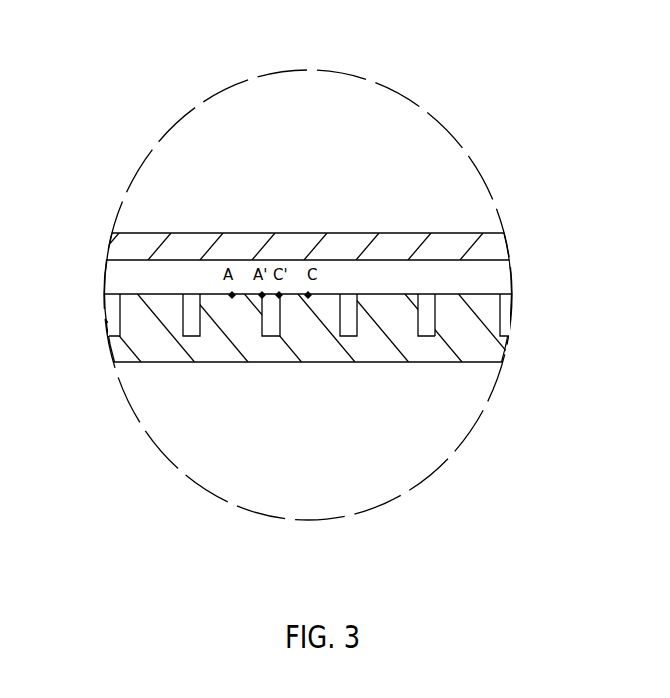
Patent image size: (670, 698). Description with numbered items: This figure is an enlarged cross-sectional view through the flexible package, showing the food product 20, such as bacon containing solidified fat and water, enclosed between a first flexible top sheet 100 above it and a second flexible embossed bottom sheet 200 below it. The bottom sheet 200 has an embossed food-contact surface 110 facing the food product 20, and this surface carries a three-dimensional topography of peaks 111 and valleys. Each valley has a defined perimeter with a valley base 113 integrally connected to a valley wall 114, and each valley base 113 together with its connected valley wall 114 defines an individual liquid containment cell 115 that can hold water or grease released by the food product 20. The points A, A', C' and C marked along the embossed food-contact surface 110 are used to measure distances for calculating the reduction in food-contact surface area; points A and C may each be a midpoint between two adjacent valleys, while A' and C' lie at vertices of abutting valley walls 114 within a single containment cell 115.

The first flexible top sheet 100 is at (350, 233).
The embossed food-contact surface 110 is at (388, 293).
The peaks 111 is at (472, 292).
The valley base 113 is at (427, 336).
The valley wall 114 is at (435, 313).
The individual liquid containment cell 115 is at (192, 322).
The food product 20 is at (130, 278).
The second flexible embossed bottom sheet 200 is at (142, 343).